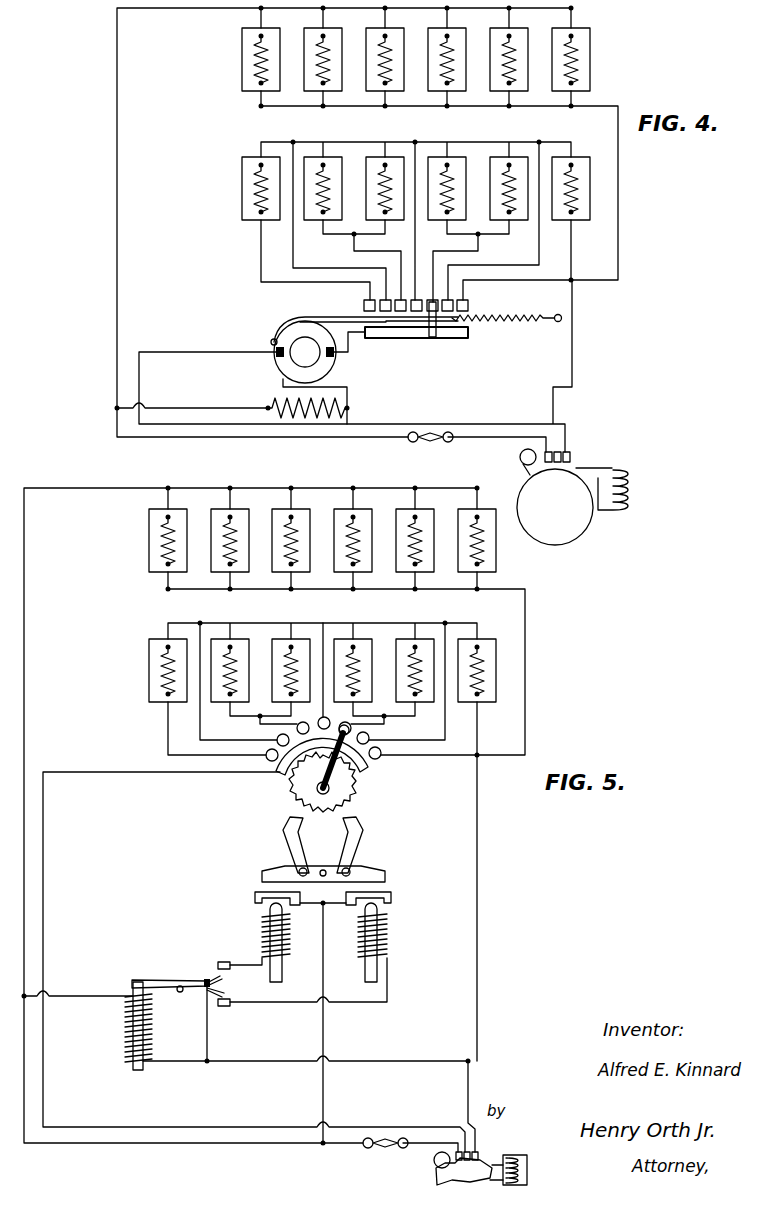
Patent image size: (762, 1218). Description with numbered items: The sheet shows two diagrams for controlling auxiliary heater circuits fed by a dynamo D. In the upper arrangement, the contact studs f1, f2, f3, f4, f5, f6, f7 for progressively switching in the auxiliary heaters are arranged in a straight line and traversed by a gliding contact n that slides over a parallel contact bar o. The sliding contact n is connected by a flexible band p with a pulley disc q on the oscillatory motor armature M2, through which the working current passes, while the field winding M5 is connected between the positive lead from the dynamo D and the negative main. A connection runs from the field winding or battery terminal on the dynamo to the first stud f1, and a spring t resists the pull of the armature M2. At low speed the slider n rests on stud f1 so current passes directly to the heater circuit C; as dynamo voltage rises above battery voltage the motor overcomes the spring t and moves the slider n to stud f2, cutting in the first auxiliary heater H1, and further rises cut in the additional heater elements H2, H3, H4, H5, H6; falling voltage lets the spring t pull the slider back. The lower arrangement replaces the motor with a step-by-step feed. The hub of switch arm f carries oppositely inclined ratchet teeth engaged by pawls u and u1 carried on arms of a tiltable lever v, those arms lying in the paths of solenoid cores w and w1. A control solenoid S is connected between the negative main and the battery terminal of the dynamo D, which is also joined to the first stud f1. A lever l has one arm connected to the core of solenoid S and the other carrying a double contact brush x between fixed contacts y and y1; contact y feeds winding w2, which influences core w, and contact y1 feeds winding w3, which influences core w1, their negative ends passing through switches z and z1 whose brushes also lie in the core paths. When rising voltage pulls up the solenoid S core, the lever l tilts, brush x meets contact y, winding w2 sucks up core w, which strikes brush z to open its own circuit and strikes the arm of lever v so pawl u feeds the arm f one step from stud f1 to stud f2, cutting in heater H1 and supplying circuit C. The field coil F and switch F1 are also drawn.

In FIG. 4, the heater circuit C is at (424, 59).
In FIG. 5, the heater circuit C is at (329, 540).
In FIG. 4, the first auxiliary heater H1 is at (590, 200).
In FIG. 5, the first auxiliary heater H1 is at (480, 688).
In FIG. 4, the auxiliary heater element H2 is at (508, 170).
In FIG. 5, the auxiliary heater element H2 is at (415, 670).
In FIG. 4, the auxiliary heater element H3 is at (448, 182).
In FIG. 5, the auxiliary heater element H3 is at (353, 670).
In FIG. 4, the auxiliary heater element H4 is at (386, 168).
In FIG. 5, the auxiliary heater element H4 is at (291, 670).
In FIG. 4, the auxiliary heater element H5 is at (324, 182).
In FIG. 5, the auxiliary heater element H5 is at (230, 670).
In FIG. 4, the auxiliary heater element H6 is at (252, 183).
In FIG. 5, the auxiliary heater element H6 is at (160, 688).
In FIG. 4, the first contact stud f1 is at (470, 306).
In FIG. 5, the first contact stud f1 is at (381, 758).
In FIG. 4, the contact stud f2 is at (470, 330).
In FIG. 4, the contact stud f3 is at (442, 316).
In FIG. 4, the contact stud f4 is at (414, 314).
In FIG. 4, the contact stud f5 is at (398, 314).
In FIG. 4, the contact stud f6 is at (381, 314).
In FIG. 4, the contact stud f7 is at (364, 305).
In FIG. 5, the contact stud f7 is at (269, 762).
In FIG. 5, the switch arm f is at (362, 770).
In FIG. 4, the contact bar o is at (482, 327).
In FIG. 4, the gliding contact n is at (416, 362).
In FIG. 4, the flexible band p is at (304, 317).
In FIG. 4, the pulley disc q is at (272, 340).
In FIG. 4, the spring t is at (507, 338).
In FIG. 4, the oscillatory motor armature M2 is at (319, 372).
In FIG. 4, the field winding M5 is at (255, 404).
In FIG. 4, the switch F1 is at (430, 444).
In FIG. 5, the switch F1 is at (385, 1157).
In FIG. 4, the dynamo D is at (555, 497).
In FIG. 5, the dynamo D is at (464, 1168).
In FIG. 4, the field coil F is at (608, 489).
In FIG. 5, the field coil F is at (517, 1170).
In FIG. 5, the pawl u is at (358, 832).
In FIG. 5, the pawl u1 is at (288, 832).
In FIG. 5, the tiltable lever v is at (372, 871).
In FIG. 5, the switch z is at (386, 892).
In FIG. 5, the switch z1 is at (257, 894).
In FIG. 5, the solenoid core w is at (378, 970).
In FIG. 5, the solenoid core w1 is at (282, 975).
In FIG. 5, the solenoid winding w2 is at (388, 928).
In FIG. 5, the solenoid winding w3 is at (262, 924).
In FIG. 5, the double contact brush x is at (232, 1000).
In FIG. 5, the fixed contact y is at (218, 1008).
In FIG. 5, the fixed contact y1 is at (230, 961).
In FIG. 5, the lever l is at (165, 980).
In FIG. 5, the control solenoid S is at (122, 1026).